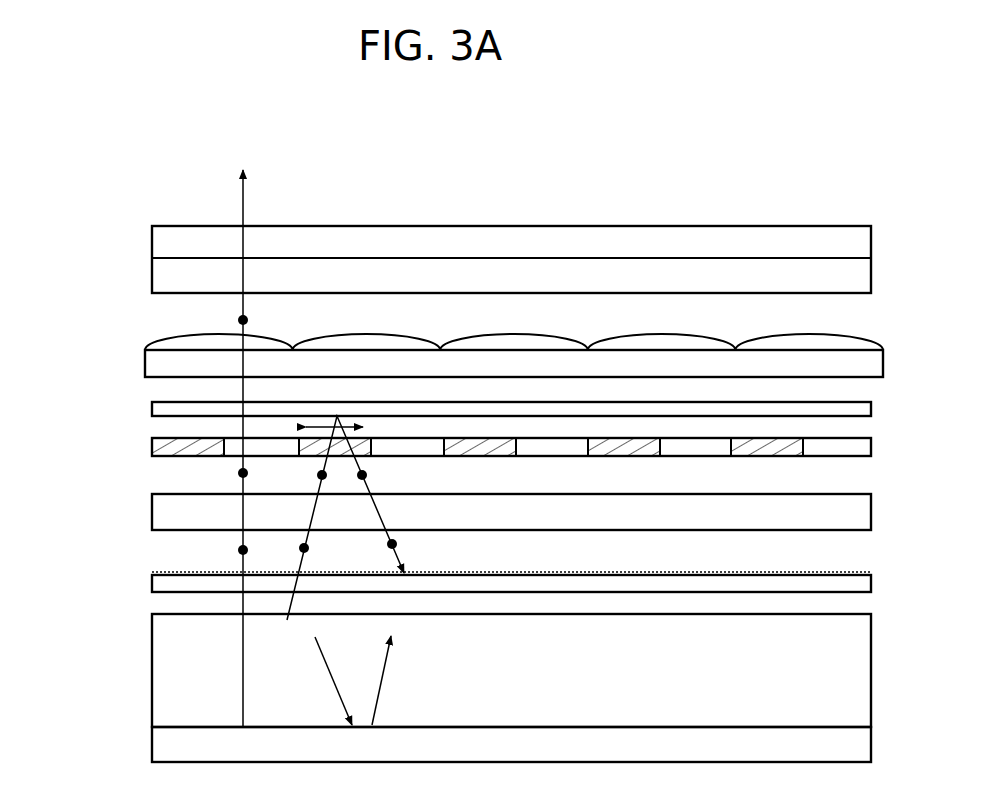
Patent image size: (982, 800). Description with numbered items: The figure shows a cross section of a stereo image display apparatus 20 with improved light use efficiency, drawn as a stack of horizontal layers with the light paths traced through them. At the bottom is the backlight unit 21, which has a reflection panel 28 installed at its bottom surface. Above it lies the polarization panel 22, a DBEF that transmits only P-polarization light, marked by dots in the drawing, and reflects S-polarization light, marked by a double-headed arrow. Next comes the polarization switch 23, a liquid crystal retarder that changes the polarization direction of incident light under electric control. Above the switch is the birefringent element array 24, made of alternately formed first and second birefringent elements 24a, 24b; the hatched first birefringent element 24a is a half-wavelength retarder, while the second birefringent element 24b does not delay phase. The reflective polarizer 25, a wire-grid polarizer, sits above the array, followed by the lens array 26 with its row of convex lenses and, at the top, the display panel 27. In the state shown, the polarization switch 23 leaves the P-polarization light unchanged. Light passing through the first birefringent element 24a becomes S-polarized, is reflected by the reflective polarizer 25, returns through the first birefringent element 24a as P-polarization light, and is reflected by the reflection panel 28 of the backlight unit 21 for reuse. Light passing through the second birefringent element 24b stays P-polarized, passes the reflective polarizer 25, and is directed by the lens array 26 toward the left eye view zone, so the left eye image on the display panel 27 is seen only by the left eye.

The image display apparatus 20 is at (96, 198).
The backlight unit 21 is at (152, 668).
The polarization panel 22 is at (152, 585).
The polarization switch 23 is at (152, 511).
The birefringent element array 24 is at (72, 433).
The first birefringent element 24a is at (152, 446).
The second birefringent element 24b is at (237, 452).
The reflective polarizer 25 is at (152, 411).
The lens array 26 is at (152, 359).
The display panel 27 is at (152, 244).
The reflection panel 28 is at (152, 745).